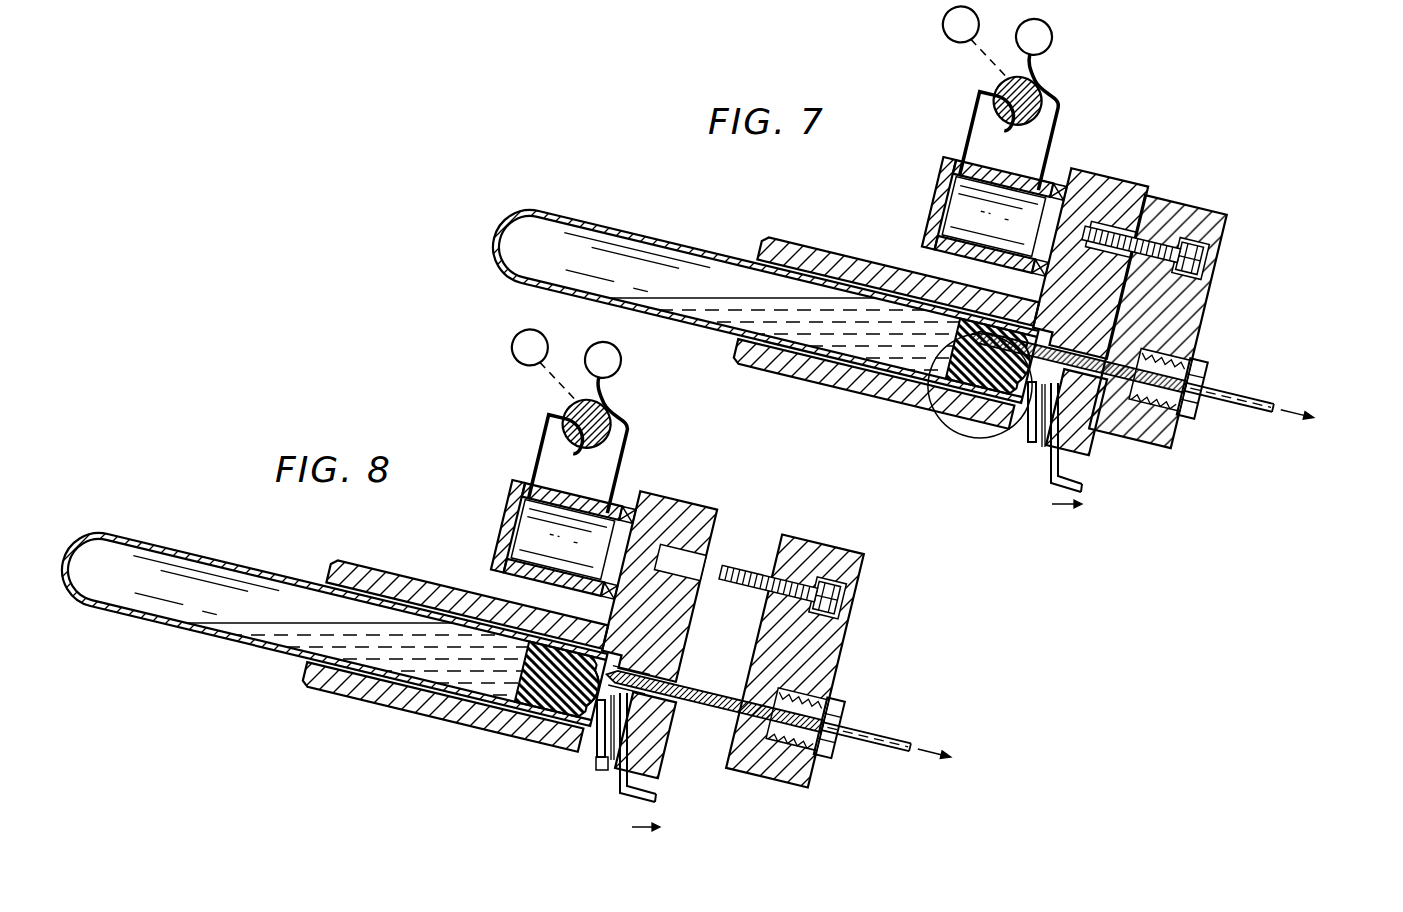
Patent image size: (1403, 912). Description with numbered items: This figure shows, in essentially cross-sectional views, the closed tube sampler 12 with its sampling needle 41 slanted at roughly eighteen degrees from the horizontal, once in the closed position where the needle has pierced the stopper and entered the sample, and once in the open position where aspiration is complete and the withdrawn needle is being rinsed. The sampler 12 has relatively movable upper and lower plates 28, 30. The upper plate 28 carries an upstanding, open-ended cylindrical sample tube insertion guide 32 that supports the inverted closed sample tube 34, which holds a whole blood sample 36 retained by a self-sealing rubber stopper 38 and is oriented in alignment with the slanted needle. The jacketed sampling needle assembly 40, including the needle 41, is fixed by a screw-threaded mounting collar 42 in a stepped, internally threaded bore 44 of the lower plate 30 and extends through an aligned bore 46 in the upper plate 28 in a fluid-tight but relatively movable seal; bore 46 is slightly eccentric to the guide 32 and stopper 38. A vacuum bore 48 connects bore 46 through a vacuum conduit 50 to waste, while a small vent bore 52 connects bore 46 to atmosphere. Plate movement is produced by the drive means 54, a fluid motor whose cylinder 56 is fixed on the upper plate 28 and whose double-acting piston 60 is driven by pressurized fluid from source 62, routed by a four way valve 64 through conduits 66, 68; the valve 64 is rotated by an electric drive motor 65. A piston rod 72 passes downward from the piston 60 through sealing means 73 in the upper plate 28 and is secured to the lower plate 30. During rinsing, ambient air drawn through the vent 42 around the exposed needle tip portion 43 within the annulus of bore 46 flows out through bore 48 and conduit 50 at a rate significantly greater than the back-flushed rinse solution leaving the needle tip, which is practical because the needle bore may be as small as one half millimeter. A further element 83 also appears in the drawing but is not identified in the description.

In FIG. 7, the closed tube sampler 12 is at (928, 313).
In FIG. 8, the closed tube sampler 12 is at (574, 570).
In FIG. 7, the upper plate 28 is at (1139, 181).
In FIG. 8, the upper plate 28 is at (672, 500).
In FIG. 7, the lower plate 30 is at (1182, 211).
In FIG. 8, the lower plate 30 is at (822, 632).
In FIG. 7, the sample tube insertion guide 32 is at (928, 400).
In FIG. 8, the sample tube insertion guide 32 is at (376, 694).
In FIG. 7, the sample tube 34 is at (645, 236).
In FIG. 8, the sample tube 34 is at (244, 566).
In FIG. 7, the whole blood sample 36 is at (718, 300).
In FIG. 8, the whole blood sample 36 is at (270, 622).
In FIG. 7, the stopper 38 is at (1000, 406).
In FIG. 8, the stopper 38 is at (540, 703).
In FIG. 7, the jacketed sampling needle assembly 40 is at (1128, 353).
In FIG. 8, the jacketed sampling needle assembly 40 is at (690, 679).
In FIG. 7, the sampling needle 41 is at (942, 402).
In FIG. 8, the sampling needle 41 is at (665, 662).
In FIG. 7, the screw-threaded mounting collar 42 is at (1187, 428).
In FIG. 8, the screw-threaded mounting collar 42 is at (845, 716).
In FIG. 8, the exposed outer surface of sampling needle tip portion 43 is at (604, 777).
In FIG. 7, the stepped and internally threaded bore 44 is at (1208, 384).
In FIG. 8, the aligned bore 46 is at (566, 704).
In FIG. 7, the vacuum bore 48 is at (1043, 453).
In FIG. 8, the vacuum bore 48 is at (660, 735).
In FIG. 7, the vacuum conduit 50 is at (1050, 463).
In FIG. 8, the vacuum conduit 50 is at (642, 792).
In FIG. 7, the vent bore 52 is at (1035, 446).
In FIG. 8, the vent bore 52 is at (600, 764).
In FIG. 7, the closed tube holding assembly drive means 54 is at (922, 232).
In FIG. 8, the closed tube holding assembly drive means 54 is at (478, 554).
In FIG. 7, the cylinder 56 is at (936, 173).
In FIG. 8, the cylinder 56 is at (510, 495).
In FIG. 7, the double-acting piston 60 is at (932, 197).
In FIG. 7, the pressurized fluid source 62 is at (1048, 48).
In FIG. 8, the pressurized fluid source 62 is at (620, 364).
In FIG. 7, the four way valve 64 is at (1046, 86).
In FIG. 8, the four way valve 64 is at (611, 418).
In FIG. 7, the electric drive motor 65 is at (949, 41).
In FIG. 8, the electric drive motor 65 is at (512, 347).
In FIG. 7, the conduit 66 is at (1056, 135).
In FIG. 8, the conduit 66 is at (621, 461).
In FIG. 7, the conduit 68 is at (968, 130).
In FIG. 8, the conduit 68 is at (534, 462).
In FIG. 7, the piston rod 72 is at (968, 262).
In FIG. 8, the piston rod 72 is at (728, 568).
In FIG. 7, the sealing means 73 is at (1062, 205).
In FIG. 8, the sealing means 73 is at (692, 602).
In FIG. 7, the outlet tube 83 is at (1223, 417).
In FIG. 8, the outlet tube 83 is at (890, 745).